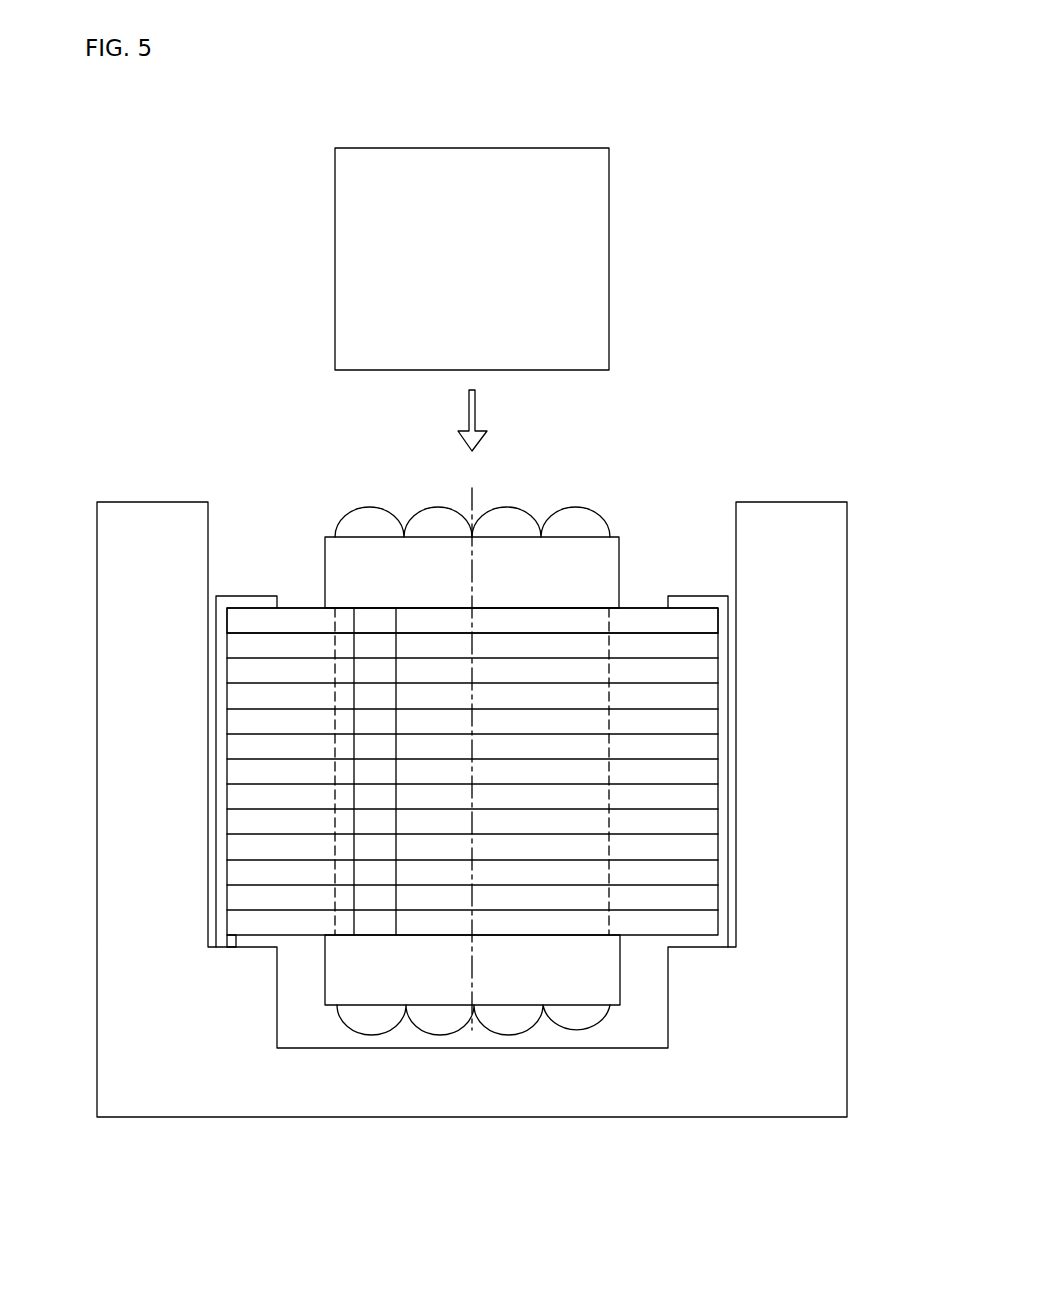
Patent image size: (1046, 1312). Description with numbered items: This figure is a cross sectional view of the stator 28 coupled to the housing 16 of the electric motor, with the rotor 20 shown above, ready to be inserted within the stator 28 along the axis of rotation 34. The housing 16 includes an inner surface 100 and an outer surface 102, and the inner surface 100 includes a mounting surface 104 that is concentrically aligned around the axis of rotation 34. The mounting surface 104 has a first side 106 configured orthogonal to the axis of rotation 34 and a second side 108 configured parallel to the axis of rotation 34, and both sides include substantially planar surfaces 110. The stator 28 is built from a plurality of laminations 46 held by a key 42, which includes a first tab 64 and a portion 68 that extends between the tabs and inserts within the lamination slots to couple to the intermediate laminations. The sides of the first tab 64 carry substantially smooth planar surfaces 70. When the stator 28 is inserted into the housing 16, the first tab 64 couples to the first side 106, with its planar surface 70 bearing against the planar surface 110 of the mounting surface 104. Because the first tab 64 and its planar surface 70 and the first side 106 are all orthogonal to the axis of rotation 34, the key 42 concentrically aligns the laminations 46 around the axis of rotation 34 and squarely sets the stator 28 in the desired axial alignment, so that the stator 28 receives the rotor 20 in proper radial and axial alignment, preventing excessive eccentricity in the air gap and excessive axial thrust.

The housing 16 is at (150, 595).
The rotor 20 is at (593, 148).
The stator 28 is at (745, 211).
The axis of rotation 34 is at (473, 1020).
The key 42 is at (222, 795).
The laminations 46 is at (690, 691).
The first tab 64 is at (220, 940).
The portion 68 is at (221, 650).
The smooth surfaces 70 is at (236, 942).
The inner surface 100 is at (210, 520).
The outer surface 102 is at (96, 705).
The mounting surface 104 is at (216, 962).
The first side 106 is at (245, 948).
The second side 108 is at (277, 1038).
The planar surfaces 110 is at (267, 948).